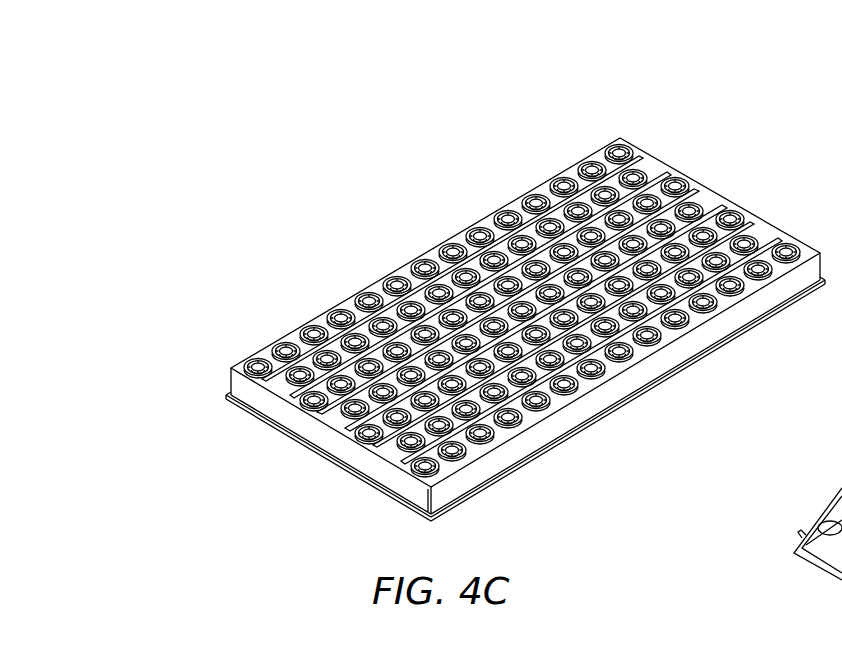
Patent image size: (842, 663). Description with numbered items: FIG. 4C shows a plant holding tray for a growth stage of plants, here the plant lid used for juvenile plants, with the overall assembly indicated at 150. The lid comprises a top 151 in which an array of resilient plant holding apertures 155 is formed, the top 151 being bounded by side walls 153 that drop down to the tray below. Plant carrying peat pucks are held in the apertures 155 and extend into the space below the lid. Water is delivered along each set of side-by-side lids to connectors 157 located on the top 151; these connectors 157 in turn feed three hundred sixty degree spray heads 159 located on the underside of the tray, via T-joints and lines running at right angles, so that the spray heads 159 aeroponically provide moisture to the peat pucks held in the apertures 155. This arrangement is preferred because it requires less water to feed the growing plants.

The sample tray 150 is at (222, 300).
The top 151 is at (397, 453).
The side walls 153 is at (282, 412).
The resilient plant holding apertures 155 is at (682, 177).
The connectors 157 is at (496, 403).
The 360 degree spray heads 159 is at (818, 505).